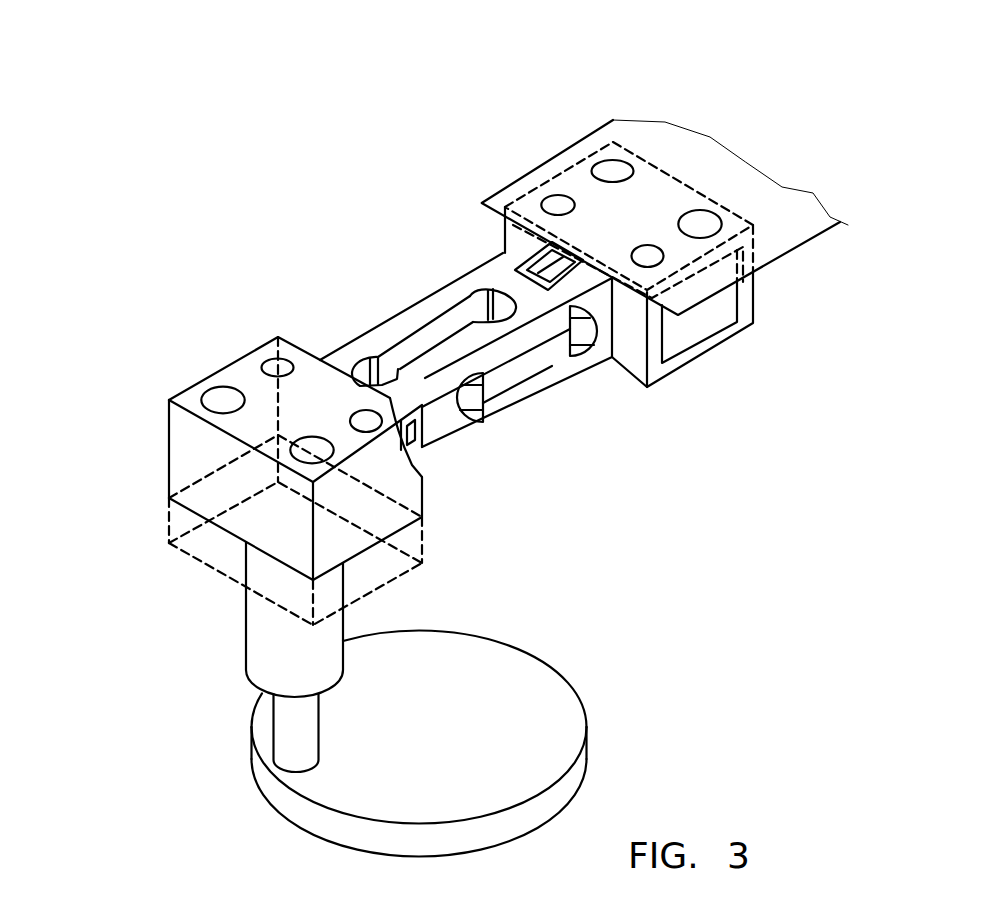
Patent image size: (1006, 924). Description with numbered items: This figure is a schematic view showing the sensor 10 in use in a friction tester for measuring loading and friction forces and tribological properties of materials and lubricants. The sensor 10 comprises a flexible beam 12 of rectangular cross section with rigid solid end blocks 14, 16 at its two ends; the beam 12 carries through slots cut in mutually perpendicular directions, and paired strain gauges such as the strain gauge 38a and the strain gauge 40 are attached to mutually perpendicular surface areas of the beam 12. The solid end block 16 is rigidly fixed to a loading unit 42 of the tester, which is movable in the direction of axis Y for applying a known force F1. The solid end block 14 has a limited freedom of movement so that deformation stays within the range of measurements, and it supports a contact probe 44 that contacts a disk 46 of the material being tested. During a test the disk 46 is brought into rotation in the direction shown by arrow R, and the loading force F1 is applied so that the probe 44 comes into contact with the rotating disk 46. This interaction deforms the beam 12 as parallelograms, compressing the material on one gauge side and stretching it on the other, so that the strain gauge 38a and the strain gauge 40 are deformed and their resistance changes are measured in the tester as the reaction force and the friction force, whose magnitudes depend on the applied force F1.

The sensor 10 is at (165, 130).
The flexible beam 12 is at (426, 300).
The solid end block 14 is at (240, 348).
The solid end block 16 is at (658, 370).
The strain gauge 38a is at (523, 258).
The strain gauge 40 is at (422, 447).
The loading unit 42 is at (787, 205).
The contact probe 44 is at (277, 742).
The disk 46 is at (560, 677).
The loading force F1 is at (623, 213).
The direction of rotation R is at (517, 687).